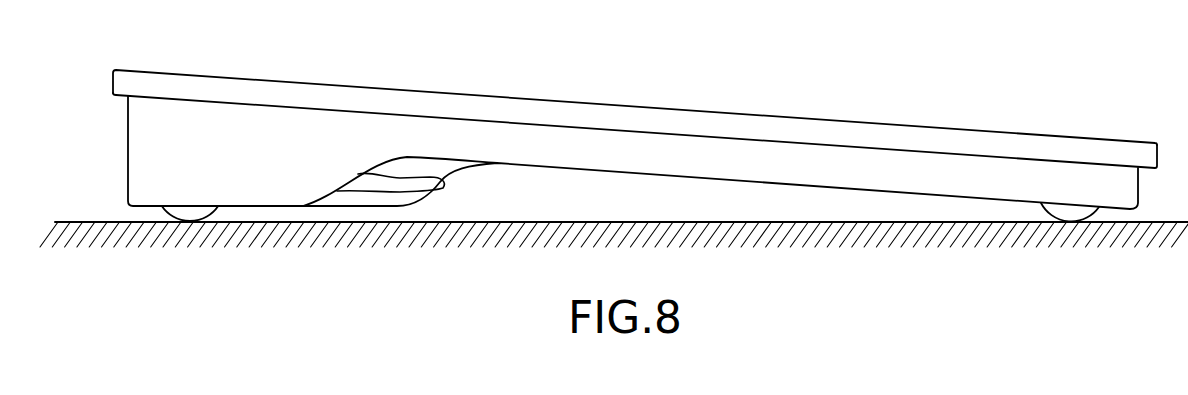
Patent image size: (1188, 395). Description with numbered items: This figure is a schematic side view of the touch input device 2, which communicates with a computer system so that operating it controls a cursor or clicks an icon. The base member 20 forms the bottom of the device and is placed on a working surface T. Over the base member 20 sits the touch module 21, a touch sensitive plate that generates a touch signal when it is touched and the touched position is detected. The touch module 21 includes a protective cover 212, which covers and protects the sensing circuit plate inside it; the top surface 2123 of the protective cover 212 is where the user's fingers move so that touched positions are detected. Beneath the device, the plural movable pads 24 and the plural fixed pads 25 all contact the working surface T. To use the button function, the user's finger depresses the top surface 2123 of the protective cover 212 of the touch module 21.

The touch input device 2 is at (1042, 72).
The base member 20 is at (153, 147).
The touch module 21 is at (223, 87).
The protective cover 212 is at (870, 122).
The top surface 2123 is at (747, 126).
The movable pads 24 is at (1077, 213).
The fixed pads 25 is at (188, 213).
The working surface T is at (545, 220).